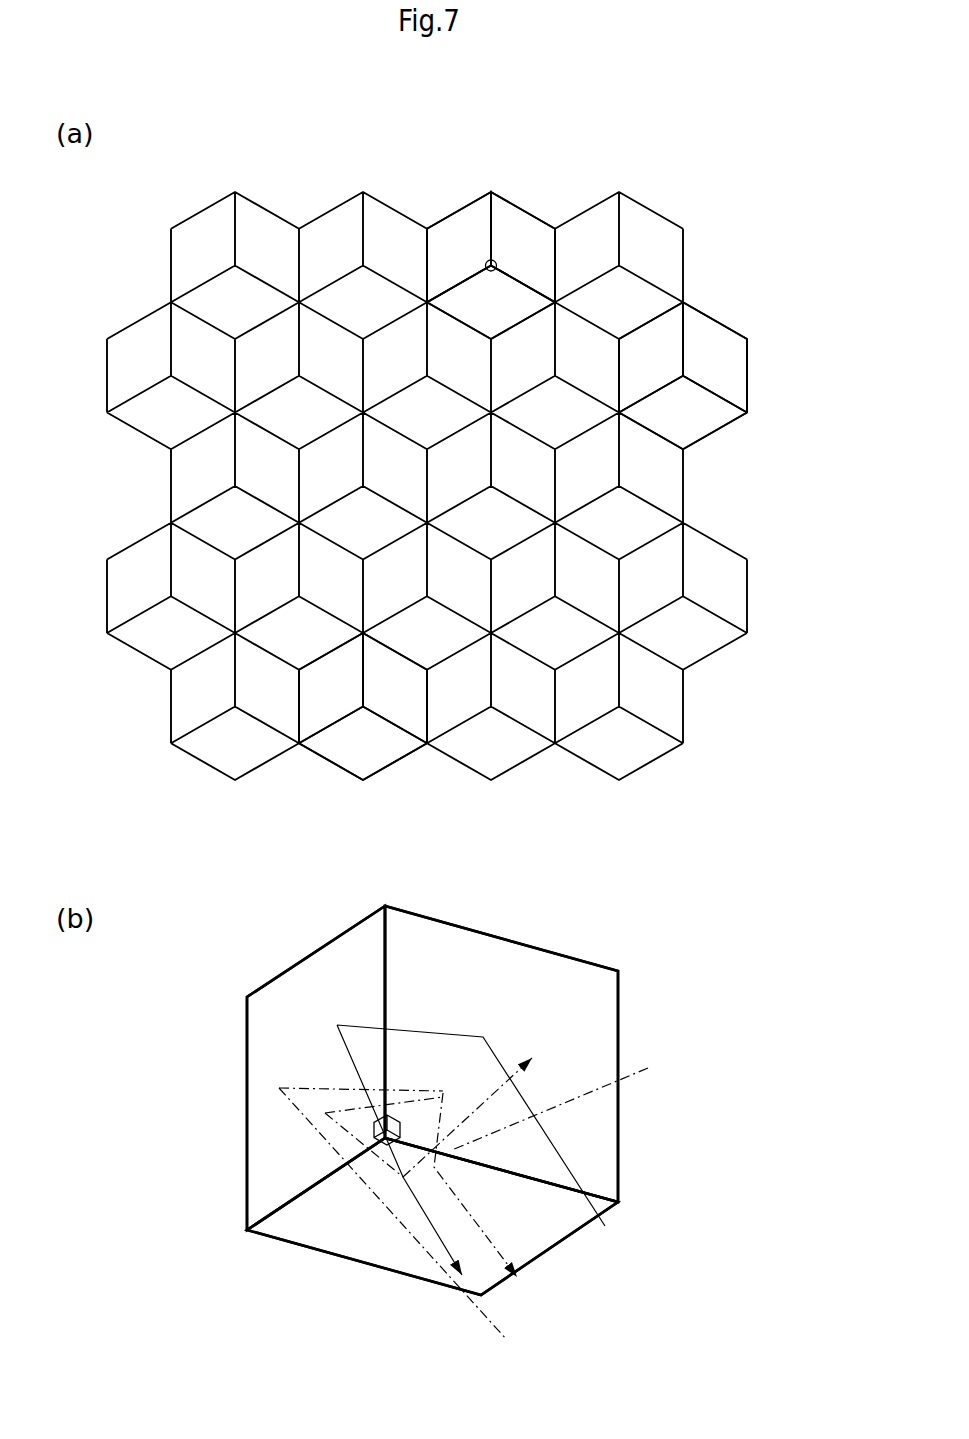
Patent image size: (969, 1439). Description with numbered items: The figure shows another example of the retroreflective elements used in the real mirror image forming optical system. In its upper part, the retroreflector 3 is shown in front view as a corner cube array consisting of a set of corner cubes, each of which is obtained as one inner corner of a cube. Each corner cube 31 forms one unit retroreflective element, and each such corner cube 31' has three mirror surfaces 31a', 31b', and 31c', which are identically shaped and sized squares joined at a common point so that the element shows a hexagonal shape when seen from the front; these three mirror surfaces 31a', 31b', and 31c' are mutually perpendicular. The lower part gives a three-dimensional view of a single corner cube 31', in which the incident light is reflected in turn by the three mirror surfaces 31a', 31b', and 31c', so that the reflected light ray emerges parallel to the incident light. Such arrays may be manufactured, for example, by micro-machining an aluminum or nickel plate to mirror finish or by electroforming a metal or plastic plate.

The retroreflector 3 is at (654, 188).
The corner cube 31 is at (549, 560).
The corner cube 31' is at (492, 716).
The mirror surface 31a' is at (501, 666).
The mirror surface 31b' is at (369, 689).
The mirror surface 31c' is at (440, 702).